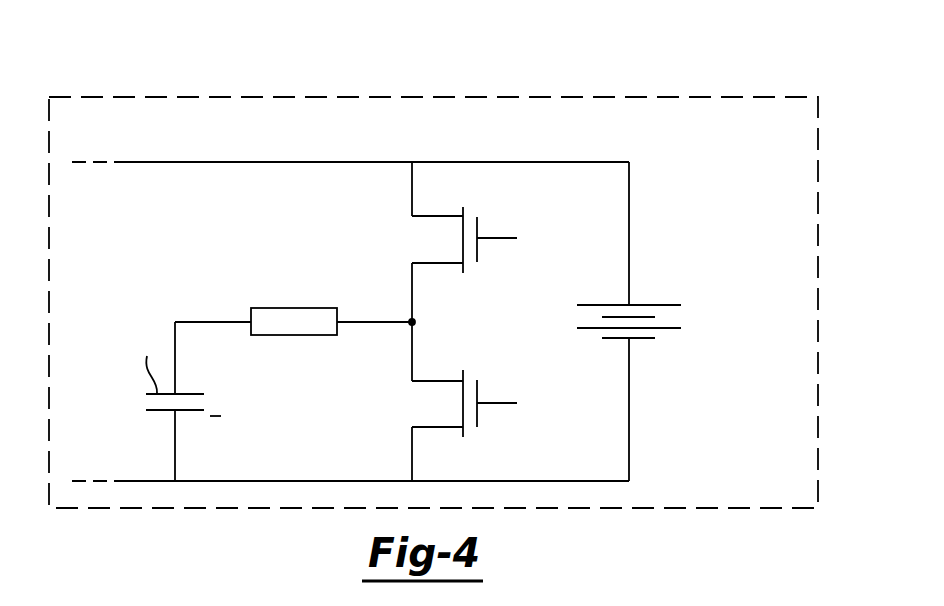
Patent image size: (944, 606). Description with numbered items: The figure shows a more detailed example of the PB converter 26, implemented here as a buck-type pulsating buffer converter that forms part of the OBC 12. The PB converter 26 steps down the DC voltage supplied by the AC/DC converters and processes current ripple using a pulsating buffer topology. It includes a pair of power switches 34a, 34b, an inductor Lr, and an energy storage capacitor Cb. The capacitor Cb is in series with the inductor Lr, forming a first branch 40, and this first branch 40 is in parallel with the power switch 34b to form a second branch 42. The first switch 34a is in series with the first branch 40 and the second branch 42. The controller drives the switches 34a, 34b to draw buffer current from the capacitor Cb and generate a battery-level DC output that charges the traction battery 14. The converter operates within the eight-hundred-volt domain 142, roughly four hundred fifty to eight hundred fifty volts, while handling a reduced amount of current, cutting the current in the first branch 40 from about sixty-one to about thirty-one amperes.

The OBC 12 is at (104, 50).
The 800V domain 142 is at (868, 305).
The PB converter 26 is at (192, 162).
The second branch 42 is at (452, 299).
The first switch 34a is at (470, 222).
The power switch 34b is at (470, 390).
The first branch 40 is at (358, 291).
The traction battery 14 is at (654, 302).